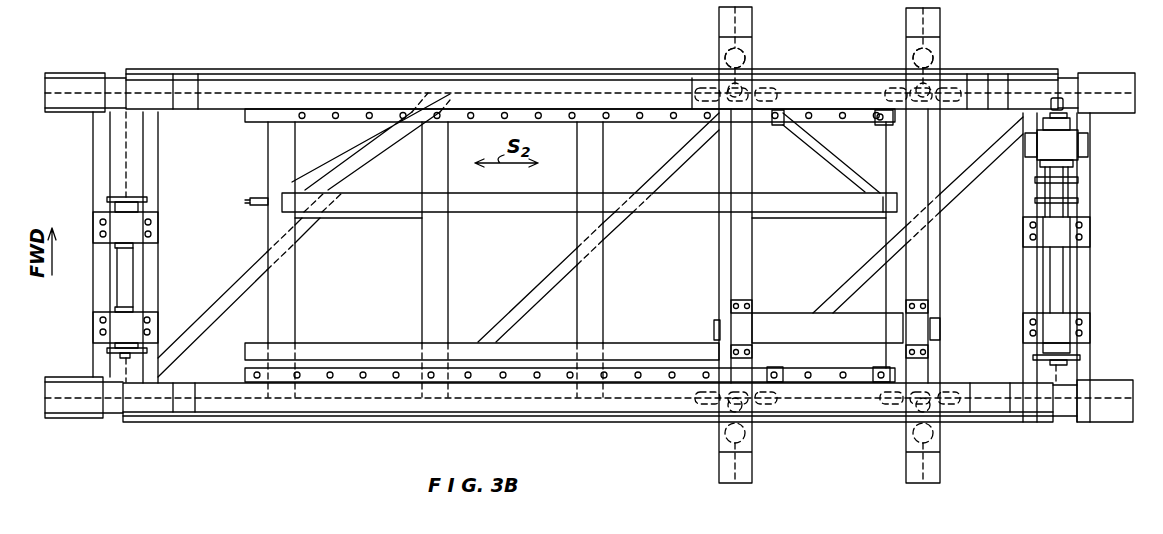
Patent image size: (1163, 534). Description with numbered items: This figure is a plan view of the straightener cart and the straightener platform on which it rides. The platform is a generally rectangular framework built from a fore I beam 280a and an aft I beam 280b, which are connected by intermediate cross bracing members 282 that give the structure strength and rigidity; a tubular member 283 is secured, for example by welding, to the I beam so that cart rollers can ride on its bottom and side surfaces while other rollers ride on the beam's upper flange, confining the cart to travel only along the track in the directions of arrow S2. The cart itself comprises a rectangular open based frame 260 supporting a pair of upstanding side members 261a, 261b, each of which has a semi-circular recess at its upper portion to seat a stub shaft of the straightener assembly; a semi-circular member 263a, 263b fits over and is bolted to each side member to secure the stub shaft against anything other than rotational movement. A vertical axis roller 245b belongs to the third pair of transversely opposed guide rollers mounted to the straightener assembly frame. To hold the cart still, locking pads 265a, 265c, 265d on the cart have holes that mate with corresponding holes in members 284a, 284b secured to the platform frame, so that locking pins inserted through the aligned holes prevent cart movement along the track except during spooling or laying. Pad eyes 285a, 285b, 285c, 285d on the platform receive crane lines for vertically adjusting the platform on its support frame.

The rectangular open based frame 260 is at (941, 46).
The upstanding side member 261a is at (920, 250).
The upstanding side member 261b is at (744, 243).
The semi-circular member 263a is at (925, 318).
The semi-circular member 263b is at (718, 318).
The locking pad 265a is at (880, 126).
The locking pad 265c is at (769, 126).
The locking pad 265d is at (775, 367).
The vertical axis roller 245b is at (877, 367).
The fore I beam 280a is at (631, 70).
The aft I beam 280b is at (610, 423).
The intermediate cross bracing member 282 is at (727, 175).
The tubular member 283 is at (483, 423).
The member secured to the straightener platform frame 284a is at (678, 125).
The member secured to the straightener platform frame 284b is at (180, 380).
The pad eye 285a is at (1000, 104).
The pad eye 285b is at (993, 382).
The pad eye 285c is at (183, 103).
The pad eye 285d is at (250, 285).